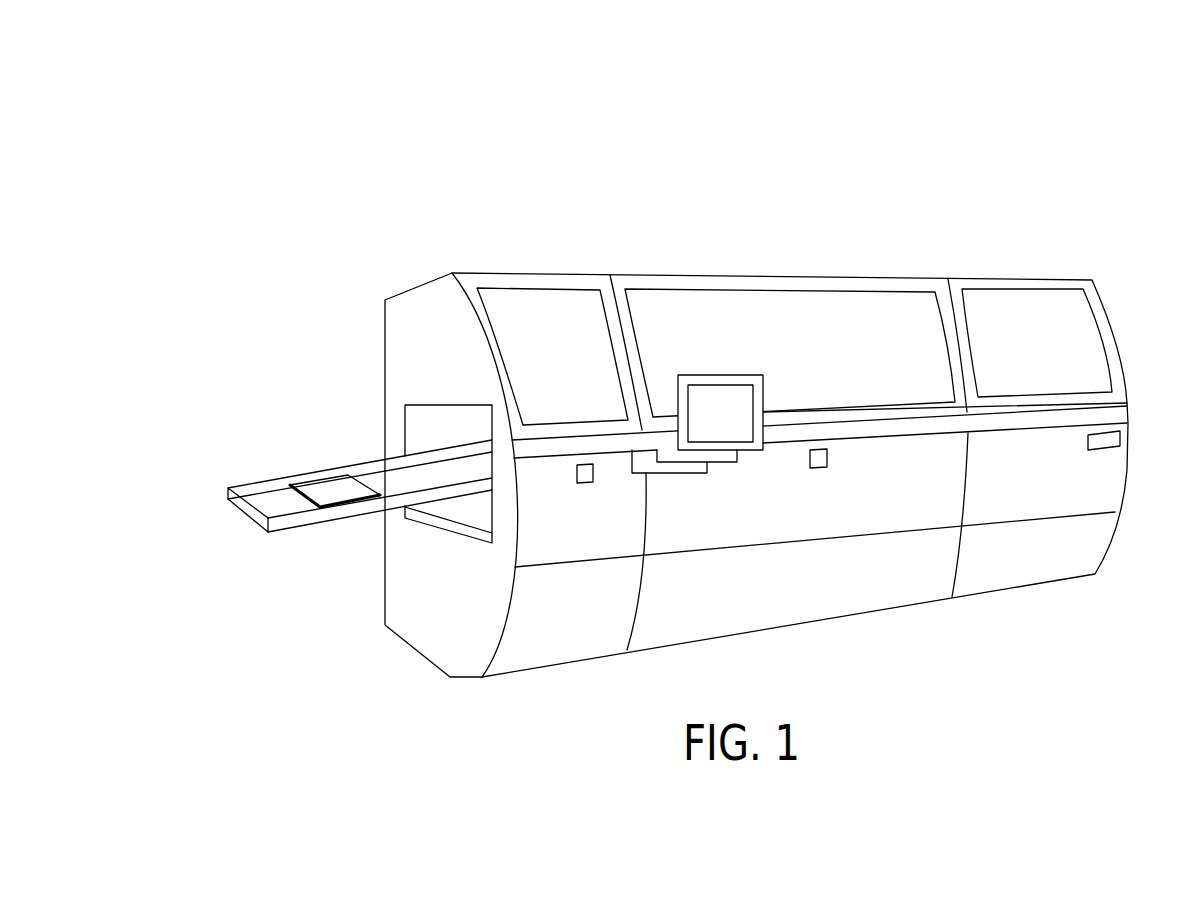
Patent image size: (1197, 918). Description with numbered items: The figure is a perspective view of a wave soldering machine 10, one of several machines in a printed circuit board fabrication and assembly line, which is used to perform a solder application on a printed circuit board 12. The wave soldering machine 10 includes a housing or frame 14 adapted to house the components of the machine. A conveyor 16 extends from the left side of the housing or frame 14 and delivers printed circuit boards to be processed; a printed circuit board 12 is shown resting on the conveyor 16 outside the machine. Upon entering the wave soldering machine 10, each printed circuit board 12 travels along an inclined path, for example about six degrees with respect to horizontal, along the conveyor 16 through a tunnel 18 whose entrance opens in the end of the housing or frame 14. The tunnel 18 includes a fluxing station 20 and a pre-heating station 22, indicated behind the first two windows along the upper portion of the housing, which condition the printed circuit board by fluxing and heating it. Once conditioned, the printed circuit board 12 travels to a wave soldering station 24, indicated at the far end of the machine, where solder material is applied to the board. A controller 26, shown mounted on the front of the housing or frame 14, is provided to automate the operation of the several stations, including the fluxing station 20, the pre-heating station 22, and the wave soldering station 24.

The wave soldering machine 10 is at (968, 228).
The printed circuit board 12 is at (325, 492).
The housing or frame 14 is at (1127, 475).
The conveyor 16 is at (237, 513).
The tunnel 18 is at (437, 422).
The fluxing station 20 is at (538, 328).
The pre-heating station 22 is at (680, 325).
The wave soldering station 24 is at (1055, 325).
The controller 26 is at (765, 392).